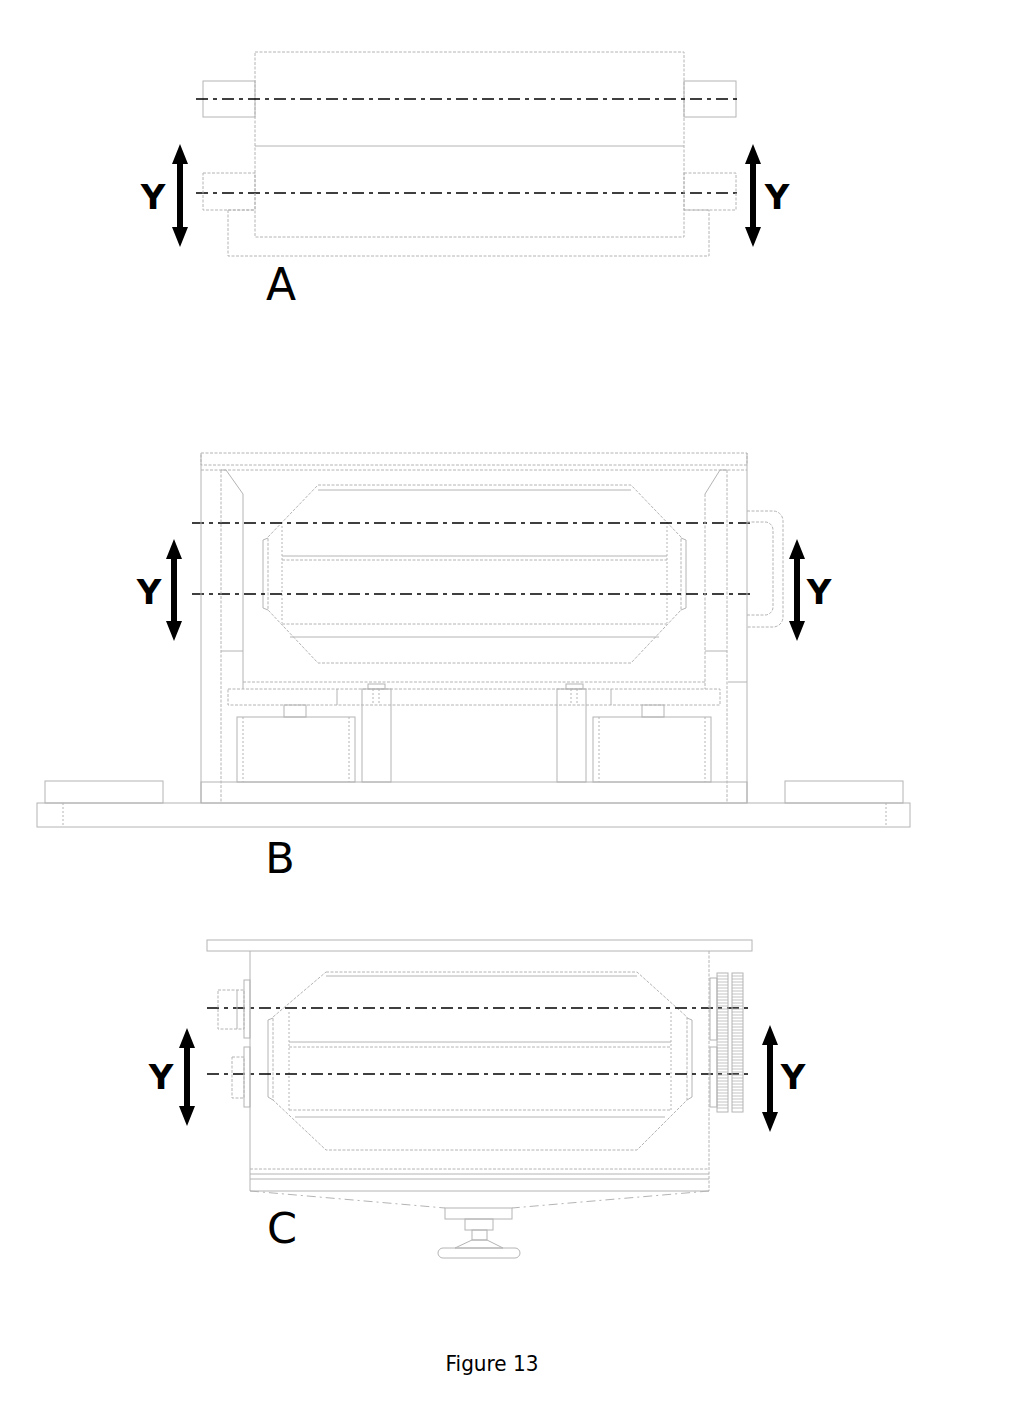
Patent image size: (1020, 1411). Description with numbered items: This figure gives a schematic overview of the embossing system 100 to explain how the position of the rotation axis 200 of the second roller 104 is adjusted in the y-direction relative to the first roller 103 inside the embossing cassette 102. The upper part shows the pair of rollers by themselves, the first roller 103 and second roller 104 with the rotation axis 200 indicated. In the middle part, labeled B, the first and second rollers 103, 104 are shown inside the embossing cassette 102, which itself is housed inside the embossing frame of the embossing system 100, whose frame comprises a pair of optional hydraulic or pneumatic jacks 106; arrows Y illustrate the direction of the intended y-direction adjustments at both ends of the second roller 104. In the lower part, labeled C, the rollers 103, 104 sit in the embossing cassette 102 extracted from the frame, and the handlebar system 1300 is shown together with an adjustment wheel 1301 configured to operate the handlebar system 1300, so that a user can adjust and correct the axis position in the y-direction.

The embossing system 100 is at (81, 589).
The embossing cassette 102 is at (80, 1088).
The first roller 103 is at (571, 108).
The second roller 104 is at (385, 167).
The hydraulic or pneumatic jacks 106 is at (268, 747).
The rotation axis 200 is at (437, 193).
The handlebar system 1300 is at (255, 255).
The adjustment wheel 1301 is at (512, 1252).